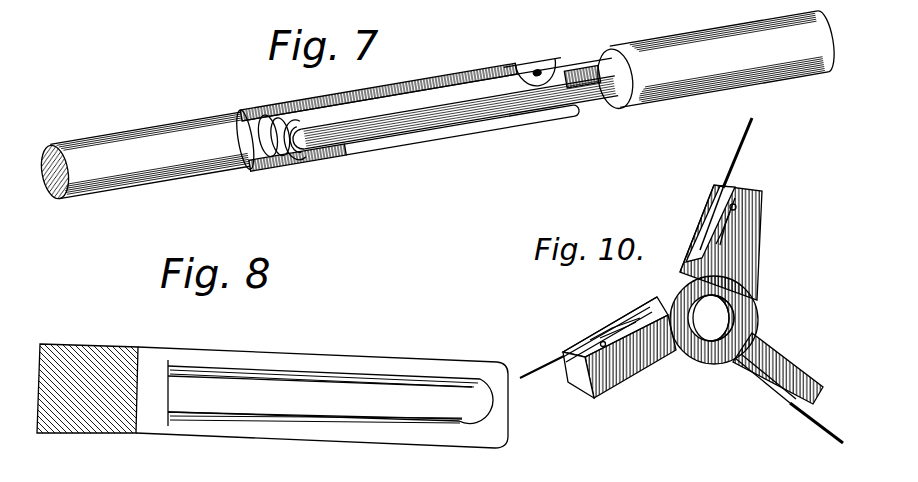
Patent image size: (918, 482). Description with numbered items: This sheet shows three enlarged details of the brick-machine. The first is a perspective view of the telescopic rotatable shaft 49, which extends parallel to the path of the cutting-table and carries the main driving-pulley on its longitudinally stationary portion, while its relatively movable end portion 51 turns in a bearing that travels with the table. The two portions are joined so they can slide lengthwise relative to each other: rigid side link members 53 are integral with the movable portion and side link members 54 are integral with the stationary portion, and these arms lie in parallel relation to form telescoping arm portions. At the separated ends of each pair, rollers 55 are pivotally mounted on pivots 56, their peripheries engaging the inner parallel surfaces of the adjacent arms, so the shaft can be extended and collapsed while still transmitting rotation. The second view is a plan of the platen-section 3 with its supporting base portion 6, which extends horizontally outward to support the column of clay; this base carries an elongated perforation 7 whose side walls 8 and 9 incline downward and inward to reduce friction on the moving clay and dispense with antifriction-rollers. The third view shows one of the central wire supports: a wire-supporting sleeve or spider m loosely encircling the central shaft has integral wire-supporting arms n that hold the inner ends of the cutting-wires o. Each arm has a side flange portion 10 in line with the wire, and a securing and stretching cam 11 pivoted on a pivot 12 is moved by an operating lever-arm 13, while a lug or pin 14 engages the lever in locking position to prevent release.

In FIG. 8, the platen-section 3 is at (83, 351).
In FIG. 8, the supporting base portion 6 is at (352, 362).
In FIG. 8, the elongated perforation 7 is at (330, 393).
In FIG. 8, the side wall of perforation 8 is at (228, 423).
In FIG. 8, the side wall of perforation 9 is at (212, 374).
In FIG. 10, the side flange portion 10 is at (722, 182).
In FIG. 10, the securing and stretching cam 11 is at (722, 200).
In FIG. 10, the pivot 12 is at (750, 210).
In FIG. 10, the operating lever-arm 13 is at (720, 222).
In FIG. 10, the lug or pin 14 is at (722, 247).
In FIG. 7, the telescopic rotatable shaft 49 is at (125, 141).
In FIG. 7, the relatively movable end portion 51 is at (668, 47).
In FIG. 7, the side link members 53 is at (585, 90).
In FIG. 7, the side link members 54 is at (393, 93).
In FIG. 7, the rollers 55 is at (275, 167).
In FIG. 7, the pivots 56 is at (313, 160).
In FIG. 10, the wire-supporting sleeve or spider m is at (752, 297).
In FIG. 10, the wire-supporting arm n is at (748, 230).
In FIG. 10, the cutting-wire o is at (748, 148).